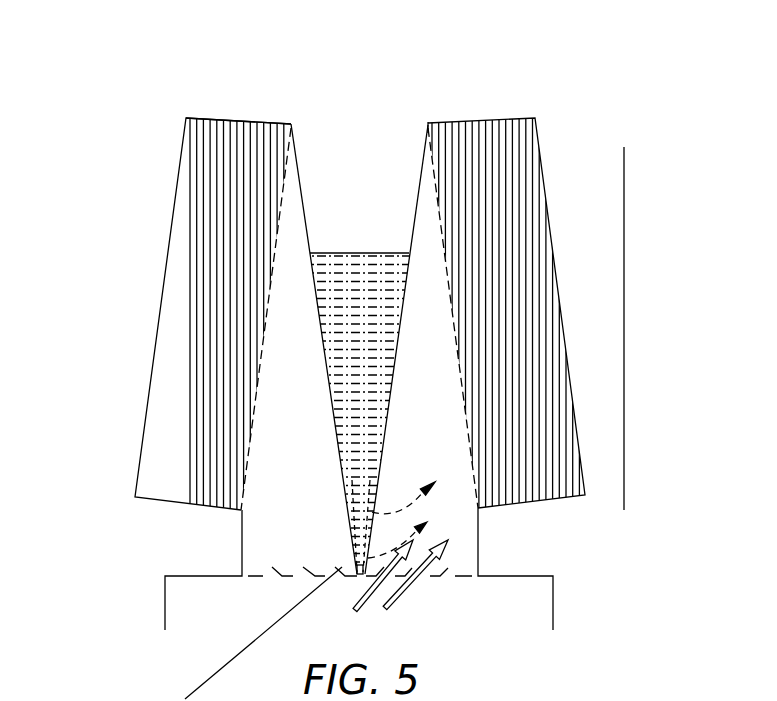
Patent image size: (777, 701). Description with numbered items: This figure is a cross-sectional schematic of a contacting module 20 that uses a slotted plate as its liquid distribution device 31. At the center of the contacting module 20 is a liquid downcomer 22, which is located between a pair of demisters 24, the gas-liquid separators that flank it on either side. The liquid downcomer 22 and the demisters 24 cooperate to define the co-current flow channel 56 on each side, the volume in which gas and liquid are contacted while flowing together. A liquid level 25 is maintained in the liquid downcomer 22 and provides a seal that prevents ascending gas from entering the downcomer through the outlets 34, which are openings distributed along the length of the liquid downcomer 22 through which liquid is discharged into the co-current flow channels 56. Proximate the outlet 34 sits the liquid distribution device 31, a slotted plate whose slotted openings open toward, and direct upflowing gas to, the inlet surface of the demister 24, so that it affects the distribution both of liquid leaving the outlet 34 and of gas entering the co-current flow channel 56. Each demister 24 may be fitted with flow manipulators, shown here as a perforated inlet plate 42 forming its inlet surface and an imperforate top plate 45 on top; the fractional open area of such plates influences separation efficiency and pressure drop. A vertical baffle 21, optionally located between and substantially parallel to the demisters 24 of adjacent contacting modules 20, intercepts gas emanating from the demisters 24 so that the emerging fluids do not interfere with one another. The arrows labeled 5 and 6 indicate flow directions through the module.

The contacting module 20 is at (124, 86).
The vertical baffle 21 is at (624, 163).
The liquid downcomer 22 is at (331, 406).
The demisters 24 is at (226, 298).
The liquid level 25 is at (376, 333).
The liquid distribution device 31 is at (437, 580).
The outlet 34 is at (350, 521).
The perforated inlet plate 42 is at (247, 475).
The imperforate top plate 45 is at (211, 121).
The co-current flow channel 56 is at (308, 365).
The melt flow direction 5 is at (388, 607).
The heat flow direction 6 is at (402, 502).